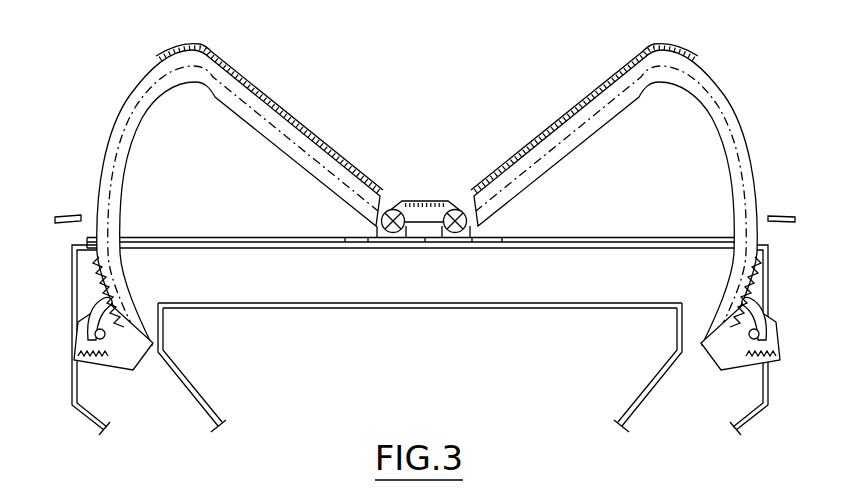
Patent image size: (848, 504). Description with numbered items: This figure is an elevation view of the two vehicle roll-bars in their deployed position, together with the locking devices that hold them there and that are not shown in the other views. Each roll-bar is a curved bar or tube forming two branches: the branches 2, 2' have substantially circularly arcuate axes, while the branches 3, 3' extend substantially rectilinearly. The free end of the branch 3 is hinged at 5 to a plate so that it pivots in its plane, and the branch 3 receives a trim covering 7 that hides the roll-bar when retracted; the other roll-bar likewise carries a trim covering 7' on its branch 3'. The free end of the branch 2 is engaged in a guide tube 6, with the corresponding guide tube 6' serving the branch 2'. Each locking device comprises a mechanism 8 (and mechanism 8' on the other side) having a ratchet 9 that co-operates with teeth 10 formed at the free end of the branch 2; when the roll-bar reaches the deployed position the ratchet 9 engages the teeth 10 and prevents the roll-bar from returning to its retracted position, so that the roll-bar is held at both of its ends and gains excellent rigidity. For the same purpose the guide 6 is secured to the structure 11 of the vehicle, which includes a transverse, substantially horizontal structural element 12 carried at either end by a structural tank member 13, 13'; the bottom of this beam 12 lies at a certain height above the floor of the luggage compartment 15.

The branch 2 is at (219, 197).
The branch 2' is at (631, 197).
The branch 3 is at (243, 198).
The branch 3' is at (611, 198).
The hinge 5 is at (421, 188).
The guide tube 6 is at (253, 262).
The guide tube 6' is at (586, 262).
The trim covering 7 is at (269, 106).
The trim covering 7' is at (584, 99).
The mechanism 8 is at (138, 384).
The mechanism 8' is at (709, 386).
The ratchet 9 is at (92, 327).
The teeth 10 is at (143, 318).
The structure 11 is at (417, 320).
The structural element 12 is at (503, 280).
The structural tank member 13 is at (65, 340).
The structural tank member 13' is at (781, 340).
The luggage compartment 15 is at (310, 372).